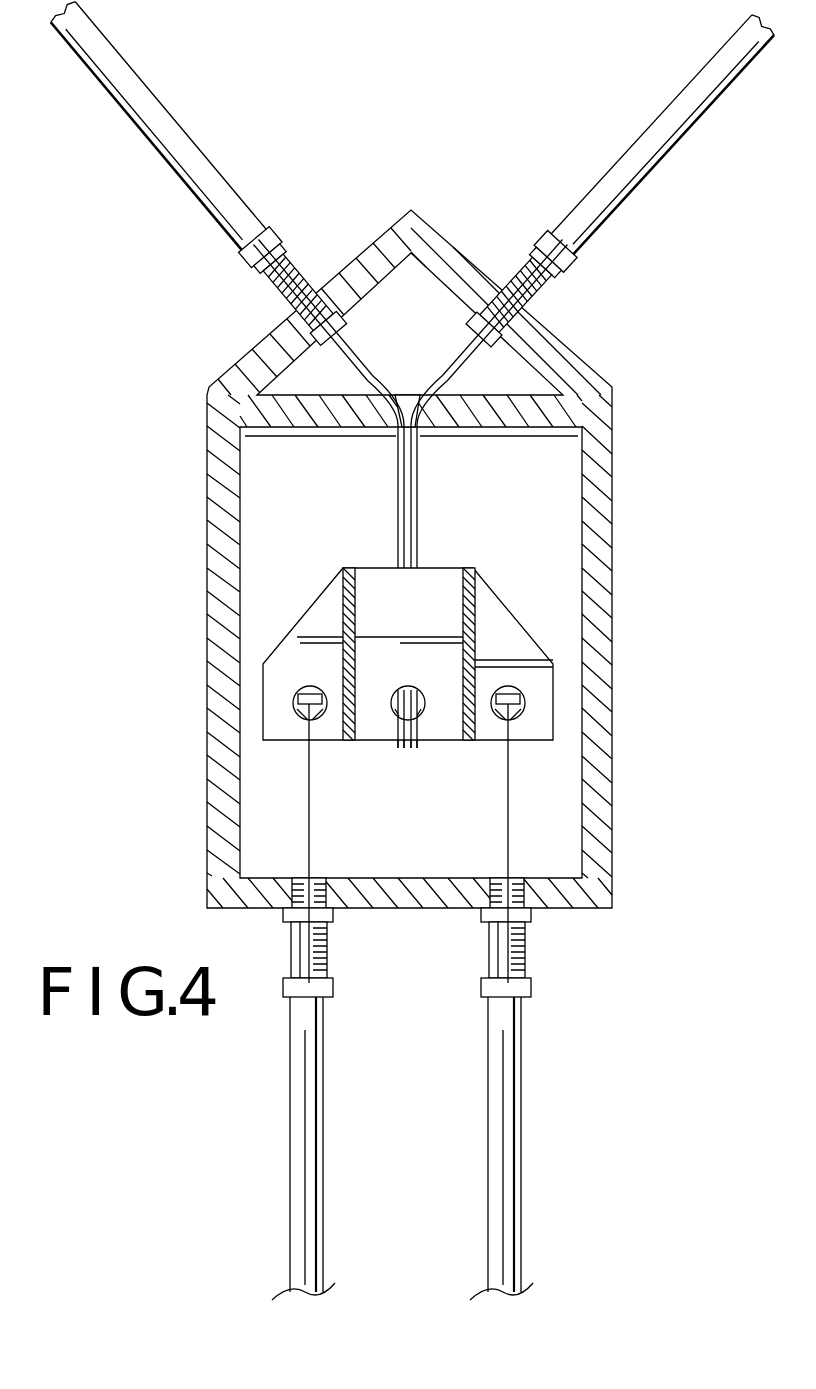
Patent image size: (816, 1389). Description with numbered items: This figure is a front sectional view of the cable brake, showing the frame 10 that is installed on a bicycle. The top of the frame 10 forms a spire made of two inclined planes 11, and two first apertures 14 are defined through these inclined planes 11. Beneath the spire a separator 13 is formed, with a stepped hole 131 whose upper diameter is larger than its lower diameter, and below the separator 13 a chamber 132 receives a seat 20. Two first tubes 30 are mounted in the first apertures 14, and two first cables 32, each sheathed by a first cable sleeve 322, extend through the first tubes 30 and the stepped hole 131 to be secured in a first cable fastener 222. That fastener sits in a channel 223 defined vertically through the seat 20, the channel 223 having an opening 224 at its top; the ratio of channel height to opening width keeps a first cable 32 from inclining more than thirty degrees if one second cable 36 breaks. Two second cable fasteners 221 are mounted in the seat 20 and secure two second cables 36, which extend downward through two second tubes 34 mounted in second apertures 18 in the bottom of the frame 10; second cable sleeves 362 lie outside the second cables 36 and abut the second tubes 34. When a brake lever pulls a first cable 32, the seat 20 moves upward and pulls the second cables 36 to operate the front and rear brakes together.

The frame 10 is at (605, 622).
The inclined planes 11 is at (232, 383).
The separator 13 is at (493, 428).
The stepped hole 131 is at (415, 403).
The chamber 132 is at (248, 597).
The first apertures 14 is at (318, 292).
The second apertures 18 is at (335, 882).
The seat 20 is at (520, 538).
The second cable fasteners 221 is at (318, 717).
The first cable fastener 222 is at (422, 717).
The channel 223 is at (455, 650).
The opening 224 is at (358, 566).
The first tubes 30 is at (268, 262).
The first cables 32 is at (290, 265).
The first cable sleeves 322 is at (170, 118).
The second tubes 34 is at (327, 958).
The second cables 36 is at (318, 828).
The second cable sleeves 362 is at (323, 1098).